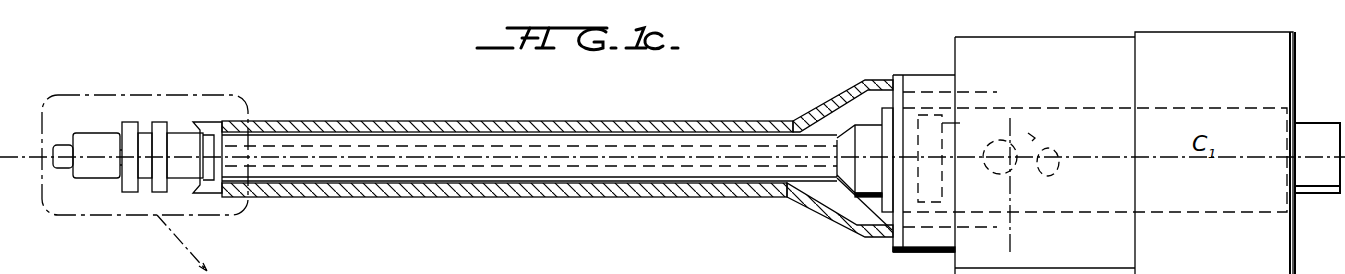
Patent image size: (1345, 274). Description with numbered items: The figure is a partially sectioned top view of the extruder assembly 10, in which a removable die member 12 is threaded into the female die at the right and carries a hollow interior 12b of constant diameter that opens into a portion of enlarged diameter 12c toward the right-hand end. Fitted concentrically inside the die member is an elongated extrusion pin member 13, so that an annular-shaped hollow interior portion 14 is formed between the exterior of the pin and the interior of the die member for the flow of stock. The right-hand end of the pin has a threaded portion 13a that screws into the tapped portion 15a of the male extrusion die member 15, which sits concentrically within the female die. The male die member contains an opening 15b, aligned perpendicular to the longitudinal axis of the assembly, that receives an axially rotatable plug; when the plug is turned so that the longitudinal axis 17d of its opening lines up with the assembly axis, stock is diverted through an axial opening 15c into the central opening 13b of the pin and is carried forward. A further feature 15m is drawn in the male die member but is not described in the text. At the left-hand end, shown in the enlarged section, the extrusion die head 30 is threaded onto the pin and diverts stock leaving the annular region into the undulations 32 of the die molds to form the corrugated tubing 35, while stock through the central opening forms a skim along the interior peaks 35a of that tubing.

The extruder assembly 10 is at (690, 108).
The removable die member 12 is at (693, 198).
The hollow interior 12b is at (607, 105).
The portion of enlarged diameter 12c is at (842, 100).
The elongated extrusion pin member 13 is at (453, 132).
The threaded portion 13a is at (958, 123).
The central opening 13b is at (401, 137).
The annular-shaped hollow interior portion 14 is at (698, 136).
The male extrusion die member 15 is at (1068, 108).
The tapped portion 15a is at (921, 112).
The opening 15b is at (1036, 133).
The axial opening 15c is at (973, 165).
The handle body aperture 15m is at (1060, 171).
The longitudinal axis 17d is at (1012, 231).
The extrusion die head 30 is at (139, 81).
The undulations 32 is at (518, 273).
The corrugated tubing 35 is at (291, 263).
The interior peaks 35a is at (338, 263).